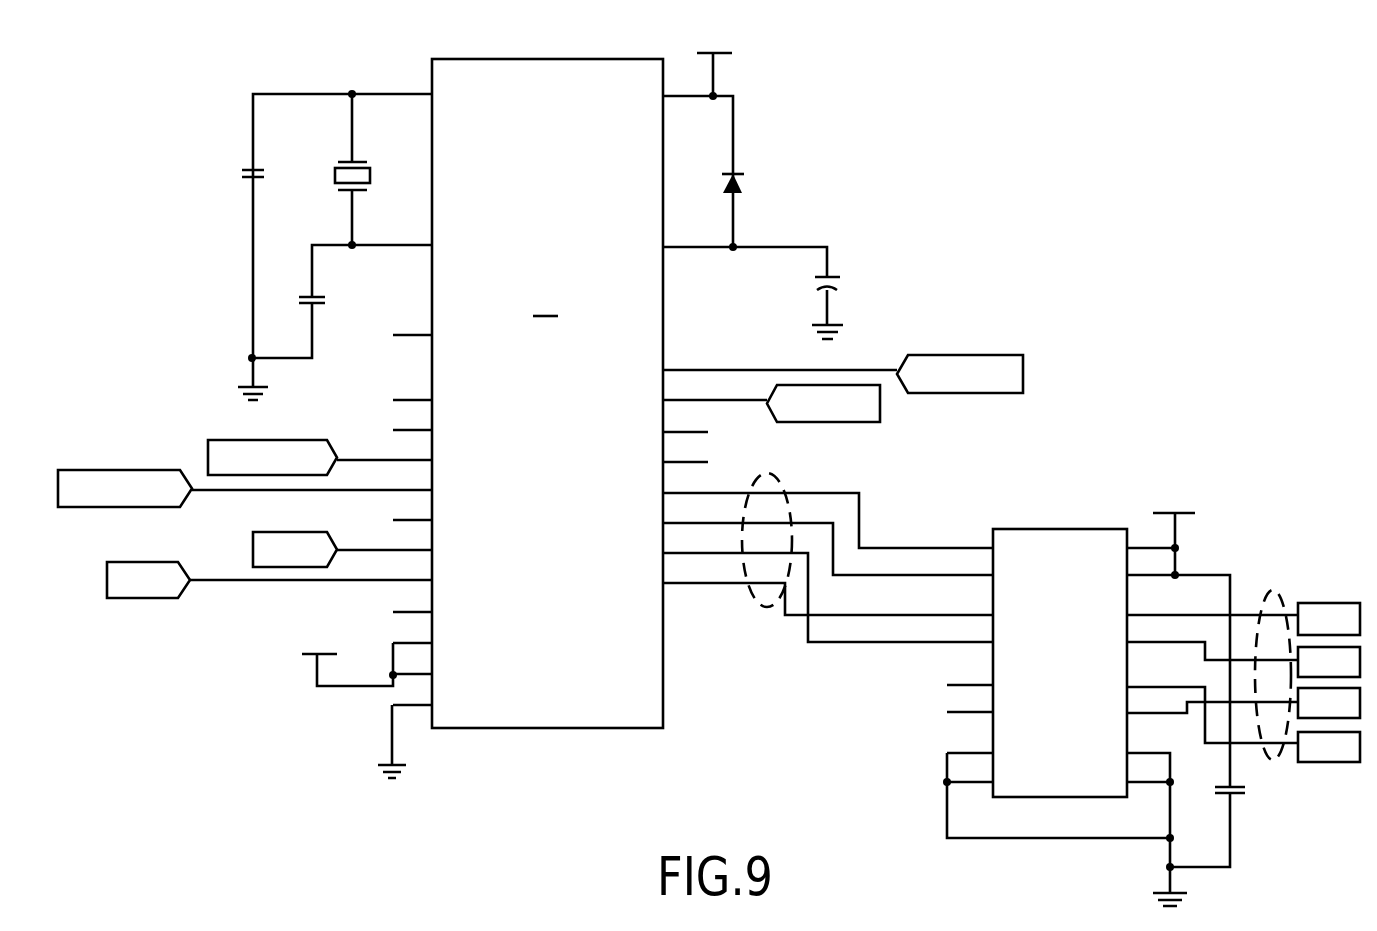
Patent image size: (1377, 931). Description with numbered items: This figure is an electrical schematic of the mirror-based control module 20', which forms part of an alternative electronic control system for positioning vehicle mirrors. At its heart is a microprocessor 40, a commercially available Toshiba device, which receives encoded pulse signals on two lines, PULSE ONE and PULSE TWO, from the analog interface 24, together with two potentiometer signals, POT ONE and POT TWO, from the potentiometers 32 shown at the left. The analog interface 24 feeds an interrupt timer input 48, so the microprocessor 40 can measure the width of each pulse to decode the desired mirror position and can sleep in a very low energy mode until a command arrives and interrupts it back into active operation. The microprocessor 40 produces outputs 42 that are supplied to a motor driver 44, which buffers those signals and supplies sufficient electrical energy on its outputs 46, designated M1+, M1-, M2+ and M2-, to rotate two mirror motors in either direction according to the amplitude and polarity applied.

The mirror-based control module 20' is at (662, 464).
The microprocessor 40 is at (550, 59).
The interrupt timer input 48 is at (680, 400).
The analog interface 24 is at (842, 422).
The outputs 42 is at (770, 473).
The motor driver 44 is at (1020, 529).
The outputs 46 is at (1276, 588).
The potentiometers 32 is at (158, 598).